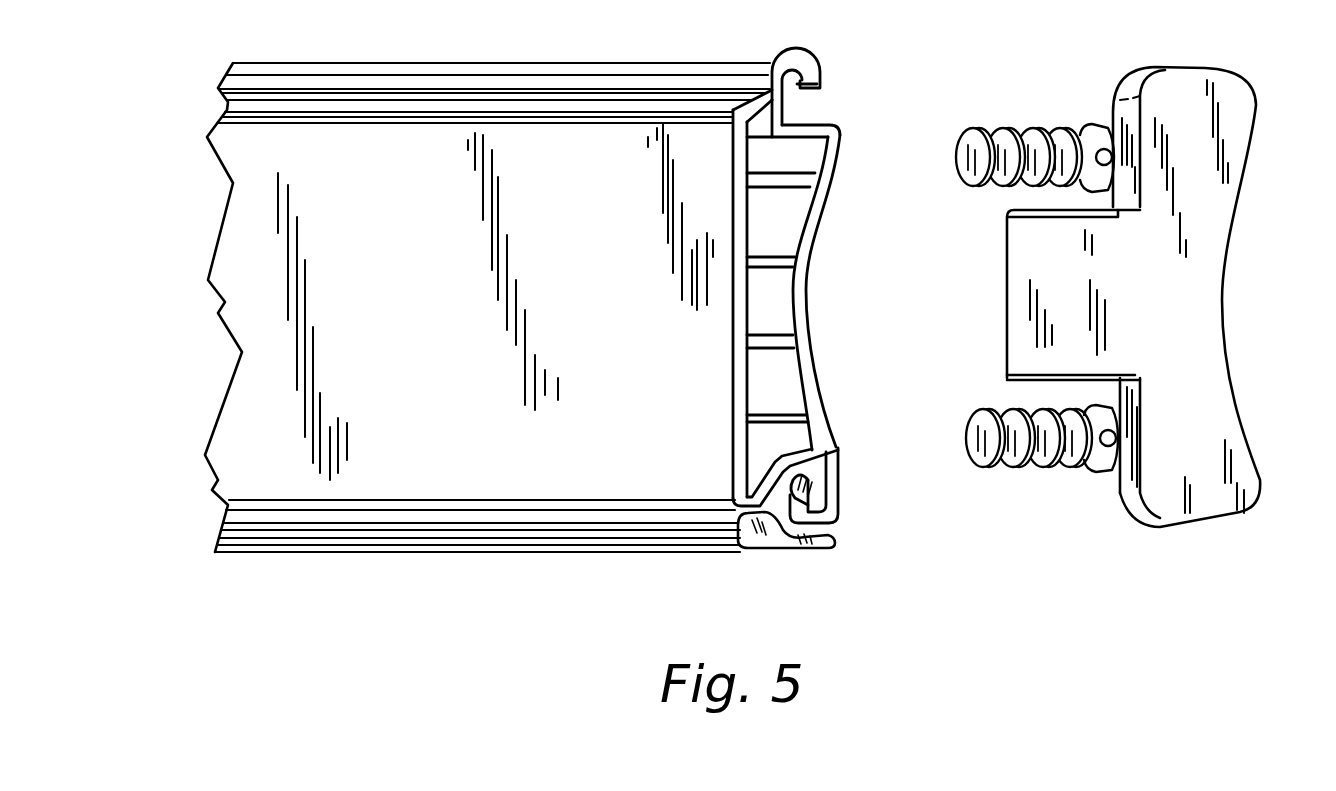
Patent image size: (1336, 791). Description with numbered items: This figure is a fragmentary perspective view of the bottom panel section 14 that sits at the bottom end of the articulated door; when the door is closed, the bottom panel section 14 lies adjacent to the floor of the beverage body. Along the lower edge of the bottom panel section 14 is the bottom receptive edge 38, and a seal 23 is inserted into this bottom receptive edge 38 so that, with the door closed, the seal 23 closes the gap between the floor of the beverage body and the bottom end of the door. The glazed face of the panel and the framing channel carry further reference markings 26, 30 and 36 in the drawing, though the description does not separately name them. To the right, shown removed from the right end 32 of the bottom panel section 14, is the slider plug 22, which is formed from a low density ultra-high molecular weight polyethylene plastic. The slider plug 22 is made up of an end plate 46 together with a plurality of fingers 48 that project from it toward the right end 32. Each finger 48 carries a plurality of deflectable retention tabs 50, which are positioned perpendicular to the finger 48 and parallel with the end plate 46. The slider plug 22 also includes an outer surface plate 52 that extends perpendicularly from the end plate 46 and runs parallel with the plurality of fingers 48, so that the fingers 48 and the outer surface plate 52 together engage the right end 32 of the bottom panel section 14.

The bottom panel section 14 is at (205, 205).
The slider plug 22 is at (1252, 521).
The seal 23 is at (777, 533).
The glass pane 26 is at (583, 473).
The holes 30 is at (947, 156).
The right end 32 is at (740, 322).
The hook 36 is at (803, 58).
The bottom receptive edge 38 is at (830, 493).
The end plate 46 is at (1207, 305).
The fingers 48 is at (1104, 150).
The deflectable retention tabs 50 is at (1063, 138).
The outer surface plate 52 is at (1040, 258).